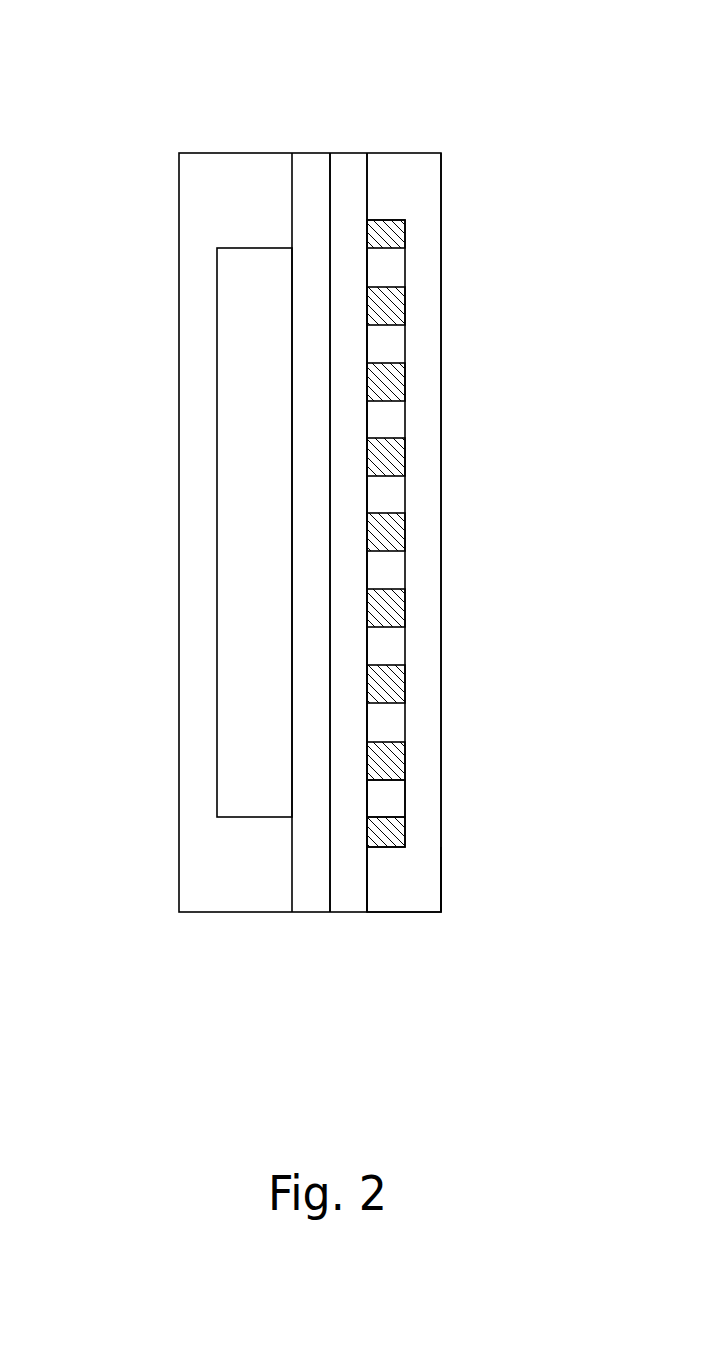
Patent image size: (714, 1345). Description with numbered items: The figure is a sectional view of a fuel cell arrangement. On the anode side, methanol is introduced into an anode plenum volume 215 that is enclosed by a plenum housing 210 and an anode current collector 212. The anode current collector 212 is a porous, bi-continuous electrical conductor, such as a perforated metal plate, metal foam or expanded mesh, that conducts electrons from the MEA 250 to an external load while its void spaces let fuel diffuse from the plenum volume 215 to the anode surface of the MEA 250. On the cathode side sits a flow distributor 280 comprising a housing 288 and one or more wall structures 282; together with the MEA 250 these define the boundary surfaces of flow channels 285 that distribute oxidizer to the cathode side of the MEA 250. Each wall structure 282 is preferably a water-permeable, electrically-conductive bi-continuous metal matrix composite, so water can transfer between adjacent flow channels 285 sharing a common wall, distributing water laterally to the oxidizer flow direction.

The plenum housing 210 is at (218, 153).
The anode current collector 212 is at (312, 153).
The anode plenum volume 215 is at (237, 457).
The MEA 250 is at (348, 153).
The flow distributor 280 is at (405, 152).
The wall structure 282 is at (382, 760).
The flow channel 285 is at (382, 798).
The housing 288 is at (400, 872).